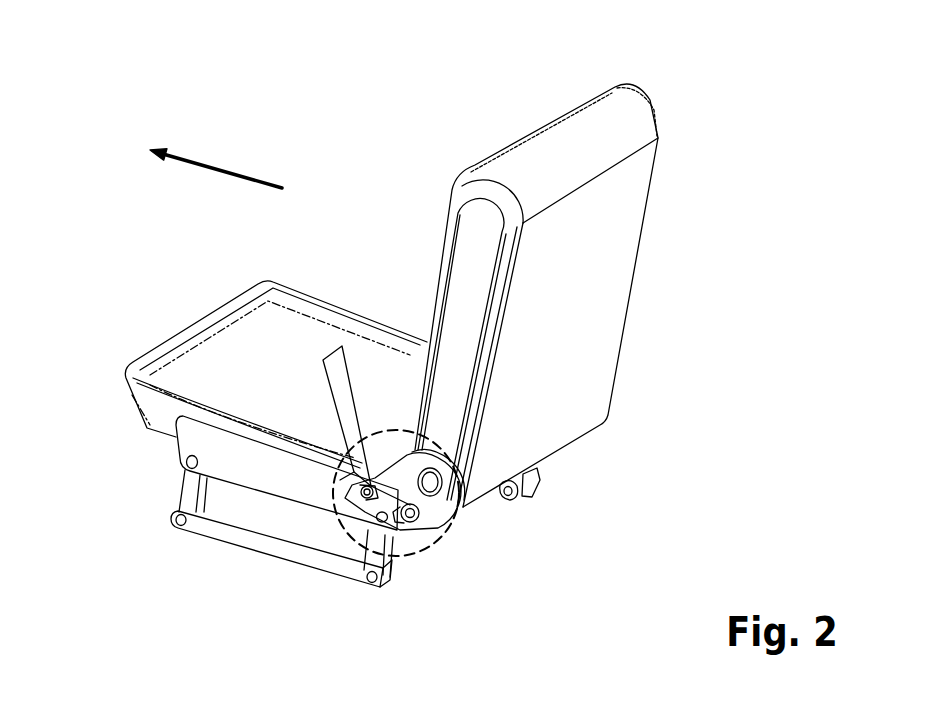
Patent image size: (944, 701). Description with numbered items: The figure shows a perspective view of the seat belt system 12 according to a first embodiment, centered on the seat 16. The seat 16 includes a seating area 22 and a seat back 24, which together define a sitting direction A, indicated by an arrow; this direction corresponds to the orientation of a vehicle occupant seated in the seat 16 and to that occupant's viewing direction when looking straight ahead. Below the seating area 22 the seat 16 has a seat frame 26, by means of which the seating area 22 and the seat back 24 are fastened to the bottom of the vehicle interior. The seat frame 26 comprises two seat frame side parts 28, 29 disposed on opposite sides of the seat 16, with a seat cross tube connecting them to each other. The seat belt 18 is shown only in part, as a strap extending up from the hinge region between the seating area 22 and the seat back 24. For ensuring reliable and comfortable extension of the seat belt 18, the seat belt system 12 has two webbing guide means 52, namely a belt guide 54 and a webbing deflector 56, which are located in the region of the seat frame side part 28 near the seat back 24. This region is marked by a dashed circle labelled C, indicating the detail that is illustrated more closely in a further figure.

The seat belt system 12 is at (326, 88).
The sitting direction A is at (227, 172).
The seat 16 is at (672, 138).
The seat belt 18 is at (340, 335).
The seating area 22 is at (200, 372).
The seat back 24 is at (540, 153).
The seat frame 26 is at (198, 543).
The seat frame side part 28 is at (185, 444).
The seat frame side part 29 is at (626, 402).
The detail region C is at (455, 522).
The webbing guide means 52 is at (410, 522).
The belt guide 54 is at (406, 513).
The webbing deflector 56 is at (358, 490).